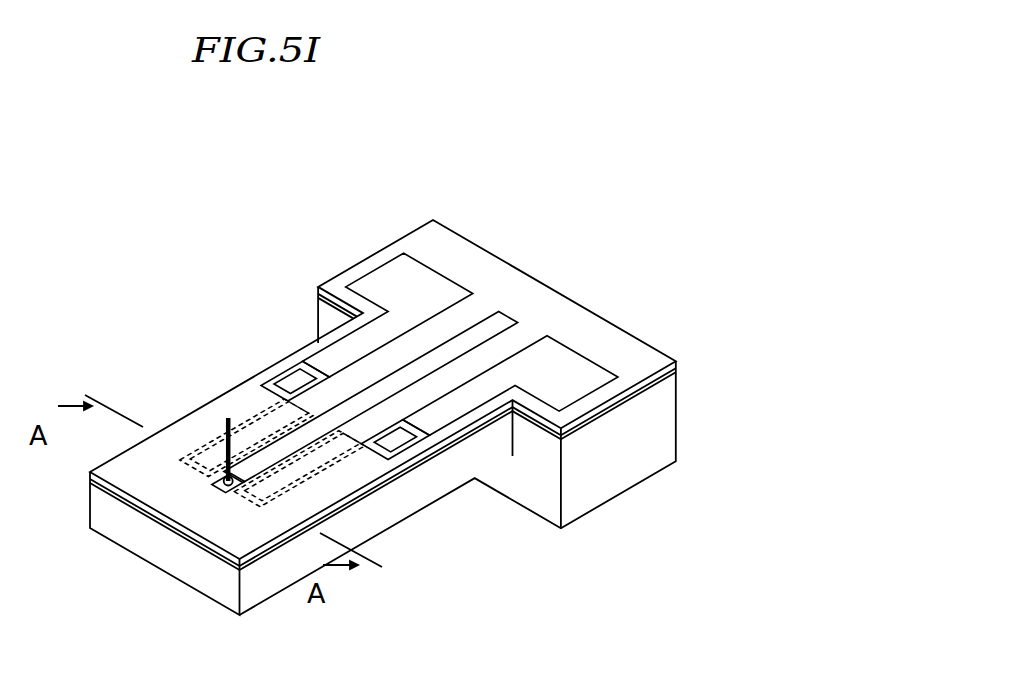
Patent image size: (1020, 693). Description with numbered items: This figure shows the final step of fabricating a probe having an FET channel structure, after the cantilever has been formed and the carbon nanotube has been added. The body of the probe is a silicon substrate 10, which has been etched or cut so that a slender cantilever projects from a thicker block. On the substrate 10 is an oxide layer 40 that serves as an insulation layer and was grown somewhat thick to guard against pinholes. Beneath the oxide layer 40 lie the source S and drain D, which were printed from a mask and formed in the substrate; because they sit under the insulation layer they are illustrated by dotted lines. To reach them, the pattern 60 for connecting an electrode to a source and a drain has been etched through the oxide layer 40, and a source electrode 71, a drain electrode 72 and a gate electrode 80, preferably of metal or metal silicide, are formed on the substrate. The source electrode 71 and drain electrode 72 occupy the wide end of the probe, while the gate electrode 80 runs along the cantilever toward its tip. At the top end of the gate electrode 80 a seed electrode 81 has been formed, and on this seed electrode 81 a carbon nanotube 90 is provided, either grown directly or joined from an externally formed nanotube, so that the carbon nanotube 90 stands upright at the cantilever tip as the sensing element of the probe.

The silicon substrate 10 is at (600, 478).
The oxide layer 40 is at (609, 403).
The pattern for connecting an electrode to a source and a drain 60 is at (296, 382).
The source electrode 71 is at (568, 369).
The drain electrode 72 is at (388, 280).
The gate electrode 80 is at (497, 320).
The seed electrode 81 is at (208, 480).
The carbon nanotube 90 is at (229, 420).
The drain D is at (210, 462).
The source S is at (330, 520).